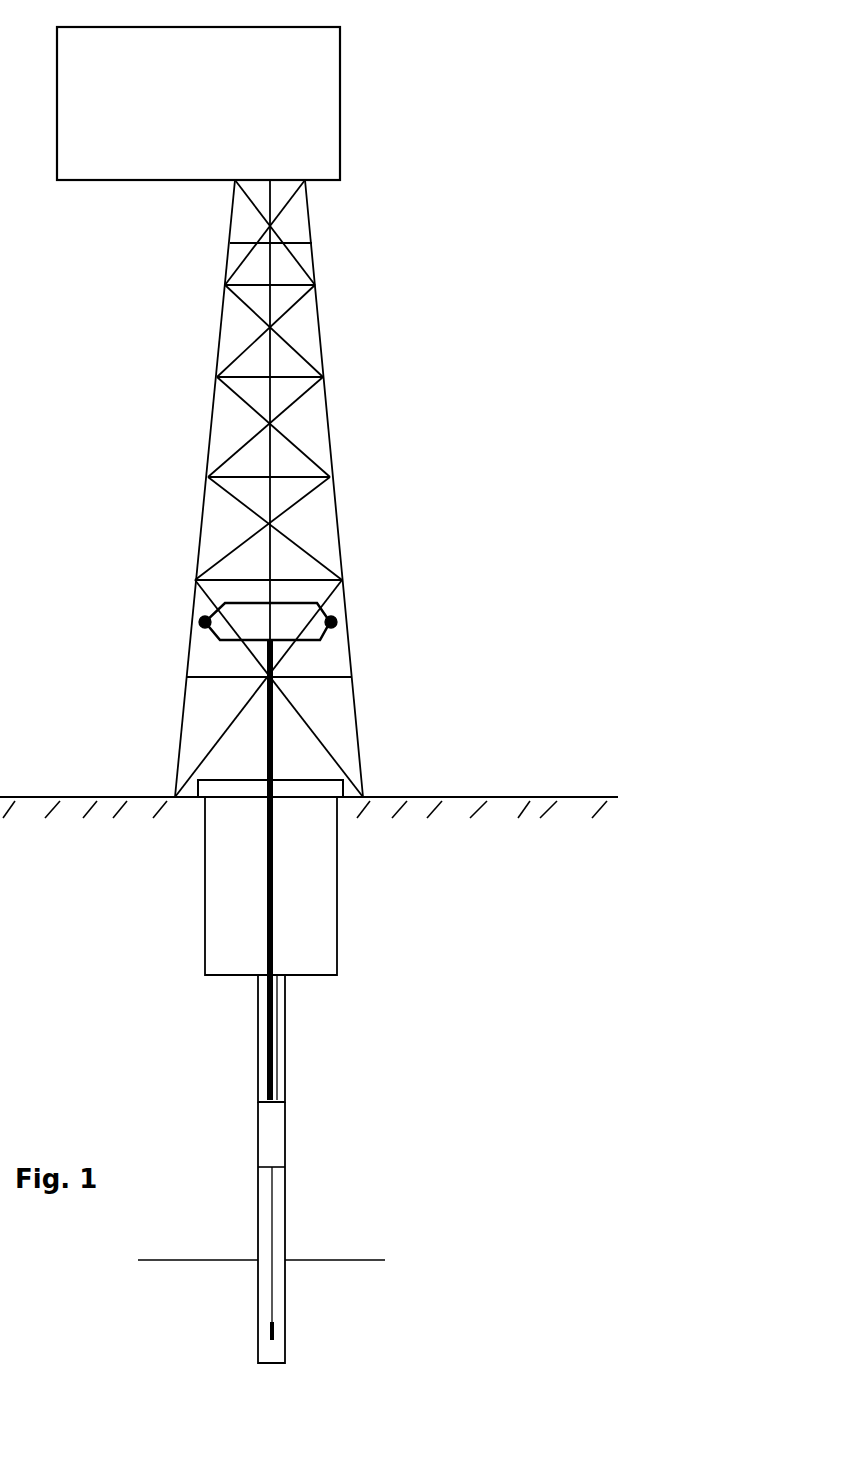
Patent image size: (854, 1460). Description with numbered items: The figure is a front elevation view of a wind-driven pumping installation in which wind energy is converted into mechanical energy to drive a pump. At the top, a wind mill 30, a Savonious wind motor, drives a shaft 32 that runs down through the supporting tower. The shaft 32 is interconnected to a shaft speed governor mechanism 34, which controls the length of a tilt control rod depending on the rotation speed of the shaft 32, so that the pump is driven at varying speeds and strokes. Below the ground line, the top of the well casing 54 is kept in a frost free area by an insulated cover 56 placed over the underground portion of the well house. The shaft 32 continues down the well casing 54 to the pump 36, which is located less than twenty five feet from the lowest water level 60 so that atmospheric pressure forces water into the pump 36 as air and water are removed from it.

The wind mill 30 is at (340, 124).
The shaft 32 is at (270, 452).
The shaft speed governor mechanism 34 is at (335, 617).
The insulated cover 56 is at (310, 788).
The well casing 54 is at (284, 1072).
The pump 36 is at (284, 1148).
The water level 60 is at (365, 1256).